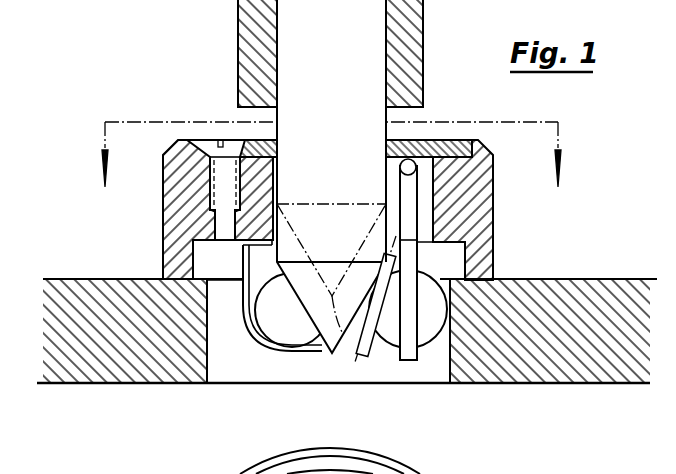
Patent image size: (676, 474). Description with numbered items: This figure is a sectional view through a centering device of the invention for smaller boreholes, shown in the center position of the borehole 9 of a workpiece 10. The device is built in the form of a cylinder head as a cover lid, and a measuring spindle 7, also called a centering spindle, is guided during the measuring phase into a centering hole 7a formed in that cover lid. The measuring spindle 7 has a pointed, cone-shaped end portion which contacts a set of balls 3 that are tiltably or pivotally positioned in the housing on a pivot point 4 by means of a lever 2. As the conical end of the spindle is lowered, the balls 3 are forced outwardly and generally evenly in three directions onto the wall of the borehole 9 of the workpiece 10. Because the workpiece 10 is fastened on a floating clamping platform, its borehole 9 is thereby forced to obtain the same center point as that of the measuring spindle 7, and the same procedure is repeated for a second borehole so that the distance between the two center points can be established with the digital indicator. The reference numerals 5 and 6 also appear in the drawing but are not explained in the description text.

The lever 2 is at (408, 228).
The ball 3 is at (295, 327).
The pivot point 4 is at (428, 140).
The cavity 5 is at (422, 198).
The cover plate 6 is at (463, 142).
The measuring spindle 7 is at (353, 82).
The centering hole 7a is at (275, 183).
The borehole 9 is at (498, 382).
The workpiece 10 is at (152, 355).